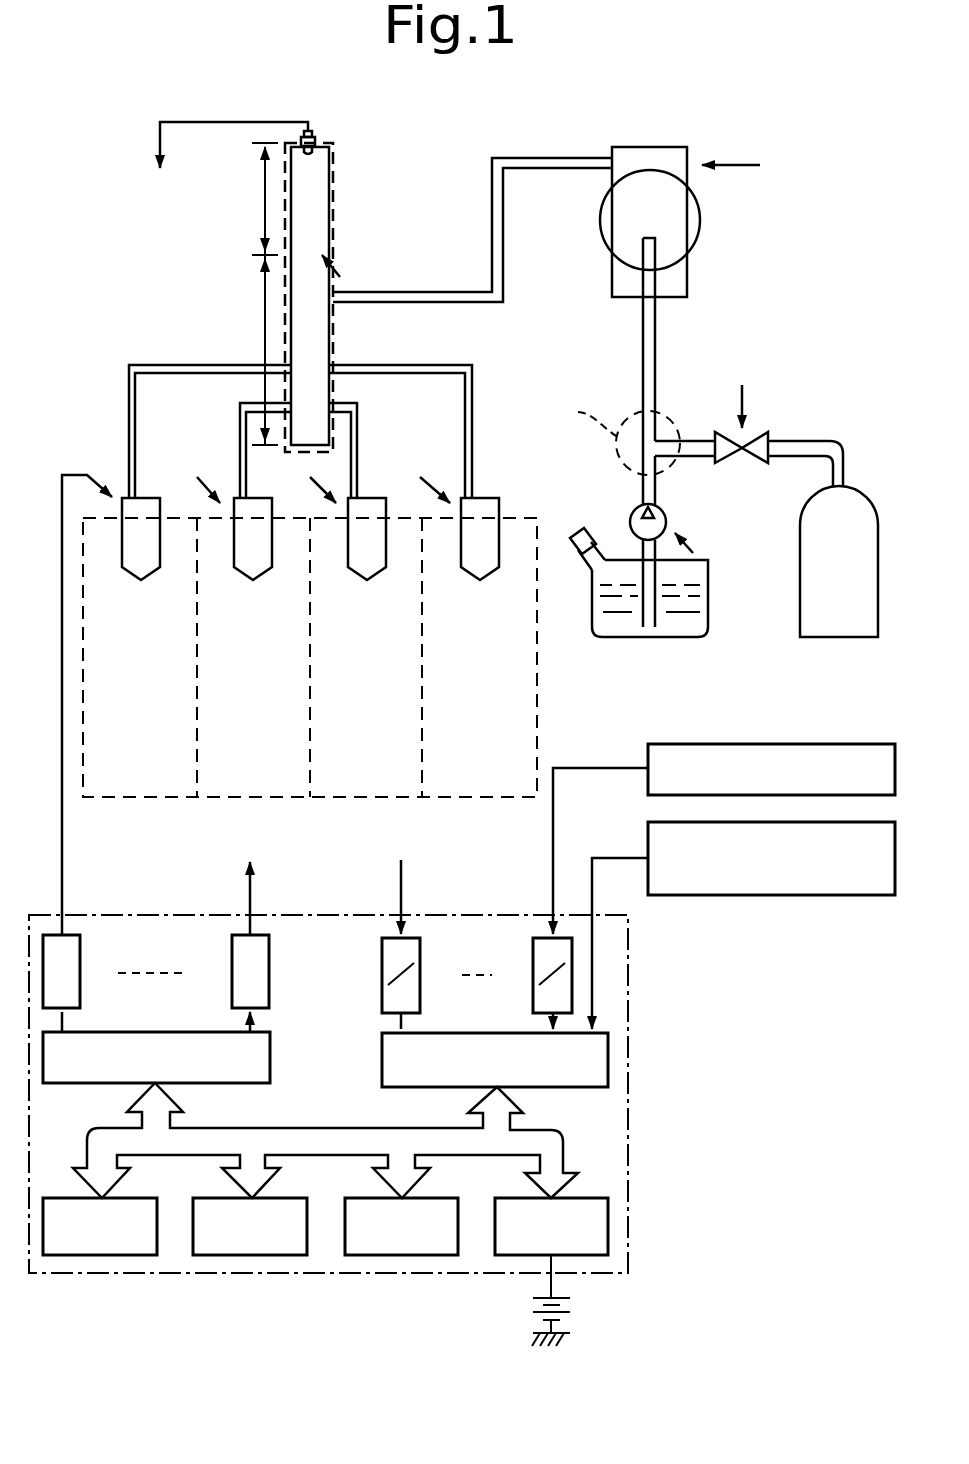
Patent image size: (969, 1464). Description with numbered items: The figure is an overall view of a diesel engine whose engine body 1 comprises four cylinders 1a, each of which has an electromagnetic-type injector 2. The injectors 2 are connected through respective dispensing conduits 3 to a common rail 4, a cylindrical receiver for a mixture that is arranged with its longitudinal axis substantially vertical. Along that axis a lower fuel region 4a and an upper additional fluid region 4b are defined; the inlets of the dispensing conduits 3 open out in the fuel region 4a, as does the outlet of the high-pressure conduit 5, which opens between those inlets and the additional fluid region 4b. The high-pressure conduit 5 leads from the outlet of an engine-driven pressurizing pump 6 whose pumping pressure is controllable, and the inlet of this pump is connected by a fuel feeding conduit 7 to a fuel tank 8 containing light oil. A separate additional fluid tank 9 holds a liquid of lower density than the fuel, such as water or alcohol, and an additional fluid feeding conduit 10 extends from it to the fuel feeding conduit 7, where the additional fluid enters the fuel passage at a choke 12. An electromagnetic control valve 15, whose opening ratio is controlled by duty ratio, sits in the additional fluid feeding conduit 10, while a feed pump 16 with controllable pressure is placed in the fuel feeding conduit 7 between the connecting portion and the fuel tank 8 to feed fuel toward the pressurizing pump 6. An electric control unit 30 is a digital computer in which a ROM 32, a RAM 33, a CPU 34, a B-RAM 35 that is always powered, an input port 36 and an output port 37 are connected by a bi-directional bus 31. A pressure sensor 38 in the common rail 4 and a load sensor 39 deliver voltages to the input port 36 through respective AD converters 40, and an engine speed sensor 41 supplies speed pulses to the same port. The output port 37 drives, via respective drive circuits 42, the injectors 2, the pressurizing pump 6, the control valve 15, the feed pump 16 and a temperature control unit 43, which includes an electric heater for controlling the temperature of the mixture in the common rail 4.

The engine body 1 is at (426, 818).
The cylinder 1a is at (150, 800).
The injector 2 is at (153, 580).
The dispensing conduit 3 is at (240, 433).
The common rail 4 is at (333, 160).
The fuel region 4a is at (265, 307).
The additional fluid region 4b is at (265, 210).
The high-pressure conduit 5 is at (492, 245).
The pressurizing pump 6 is at (687, 268).
The fuel feeding conduit 7 is at (642, 343).
The fuel tank 8 is at (708, 618).
The additional fluid tank 9 is at (800, 556).
The additional fluid feeding conduit 10 is at (796, 441).
The choke 12 is at (657, 430).
The control valve 15 is at (722, 465).
The feed pump 16 is at (630, 517).
The electric control unit 30 is at (292, 915).
The bi-directional bus 31 is at (566, 1141).
The ROM 32 is at (105, 1255).
The RAM 33 is at (245, 1255).
The CPU 34 is at (392, 1255).
The B-RAM 35 is at (515, 1255).
The input port 36 is at (382, 1070).
The output port 37 is at (272, 1052).
The pressure sensor 38 is at (316, 133).
The load sensor 39 is at (648, 755).
The AD converter 40 is at (560, 936).
The engine speed sensor 41 is at (648, 830).
The drive circuit 42 is at (240, 933).
The temperature control unit 43 is at (337, 218).